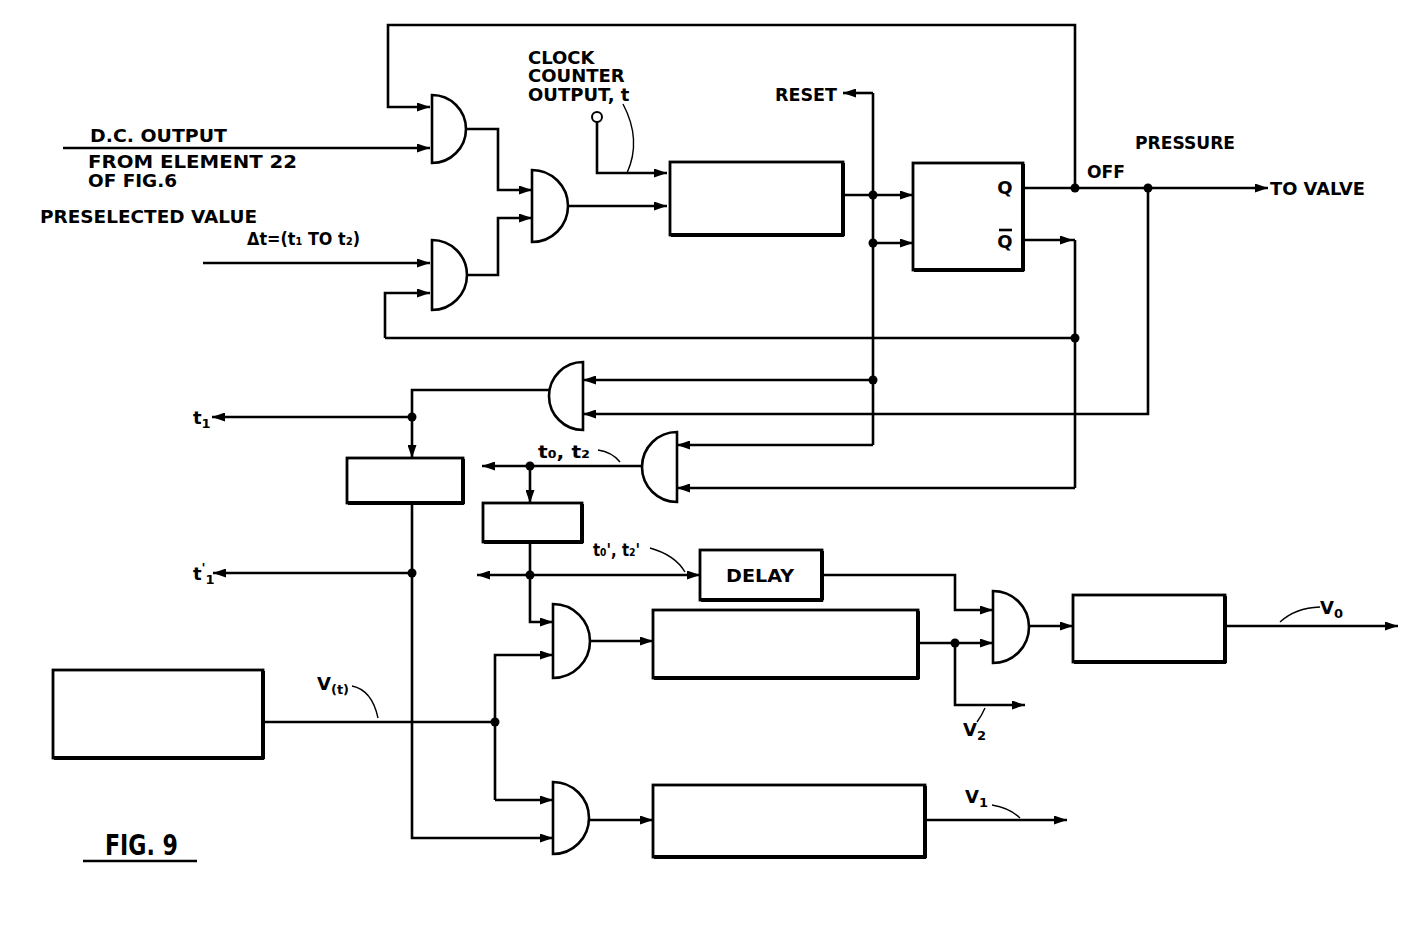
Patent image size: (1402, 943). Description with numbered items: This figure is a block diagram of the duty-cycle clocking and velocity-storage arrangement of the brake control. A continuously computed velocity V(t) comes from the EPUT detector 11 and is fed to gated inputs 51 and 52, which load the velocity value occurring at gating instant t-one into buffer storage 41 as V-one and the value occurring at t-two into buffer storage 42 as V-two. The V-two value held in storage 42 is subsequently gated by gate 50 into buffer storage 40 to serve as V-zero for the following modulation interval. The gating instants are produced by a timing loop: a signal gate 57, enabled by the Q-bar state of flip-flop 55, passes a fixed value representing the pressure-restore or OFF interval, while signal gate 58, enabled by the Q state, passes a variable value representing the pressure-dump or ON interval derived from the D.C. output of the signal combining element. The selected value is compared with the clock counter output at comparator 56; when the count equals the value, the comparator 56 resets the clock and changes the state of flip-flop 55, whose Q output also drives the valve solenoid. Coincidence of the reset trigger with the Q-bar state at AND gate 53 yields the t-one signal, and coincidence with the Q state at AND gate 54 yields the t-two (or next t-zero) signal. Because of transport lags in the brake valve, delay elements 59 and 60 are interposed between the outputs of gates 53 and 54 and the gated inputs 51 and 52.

The EPUT device 11 is at (155, 688).
The gated buffer storage element 40 is at (1160, 612).
The gated buffer storage element 41 is at (750, 800).
The gated buffer storage element 42 is at (835, 622).
The gate 50 is at (1003, 620).
The gated input 51 is at (568, 812).
The gated input 52 is at (568, 645).
The AND gate 53 is at (567, 388).
The AND gate 54 is at (655, 455).
The flip-flop 55 is at (950, 200).
The comparator 56 is at (735, 180).
The signal gate 57 is at (445, 268).
The signal gate 58 is at (448, 123).
The delay 59 is at (365, 467).
The delay 60 is at (560, 512).